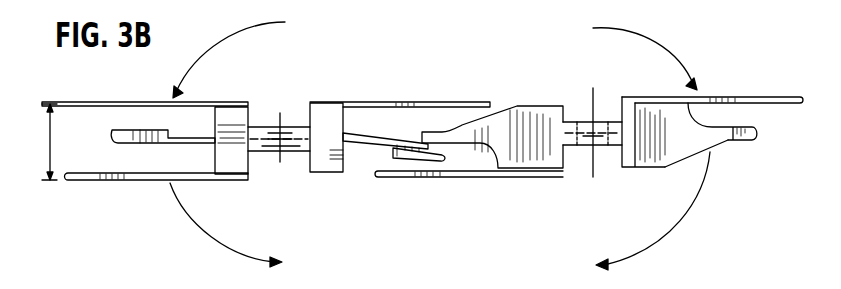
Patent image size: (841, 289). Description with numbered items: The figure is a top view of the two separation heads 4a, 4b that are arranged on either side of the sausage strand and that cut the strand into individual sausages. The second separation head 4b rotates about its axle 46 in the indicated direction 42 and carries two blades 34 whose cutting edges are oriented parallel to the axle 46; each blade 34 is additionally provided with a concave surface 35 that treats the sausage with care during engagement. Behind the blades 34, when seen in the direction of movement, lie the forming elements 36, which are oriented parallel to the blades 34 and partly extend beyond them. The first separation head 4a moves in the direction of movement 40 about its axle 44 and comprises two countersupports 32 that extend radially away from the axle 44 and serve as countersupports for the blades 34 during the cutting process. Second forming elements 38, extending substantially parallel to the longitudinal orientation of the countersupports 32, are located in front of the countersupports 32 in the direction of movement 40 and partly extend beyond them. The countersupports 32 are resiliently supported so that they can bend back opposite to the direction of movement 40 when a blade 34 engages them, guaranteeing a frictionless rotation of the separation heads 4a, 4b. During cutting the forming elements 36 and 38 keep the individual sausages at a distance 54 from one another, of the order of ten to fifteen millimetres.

The distance 54 is at (48, 128).
The direction of movement 40 is at (228, 38).
The direction 42 is at (649, 43).
The axle 44 is at (280, 138).
The axle 46 is at (588, 110).
The second forming elements 38 is at (122, 178).
The forming elements 36 is at (404, 178).
The countersupports 32 is at (113, 136).
The blades 34 is at (440, 134).
The concave surface 35 is at (728, 144).
The separation head 4a is at (290, 178).
The separation head 4b is at (585, 183).